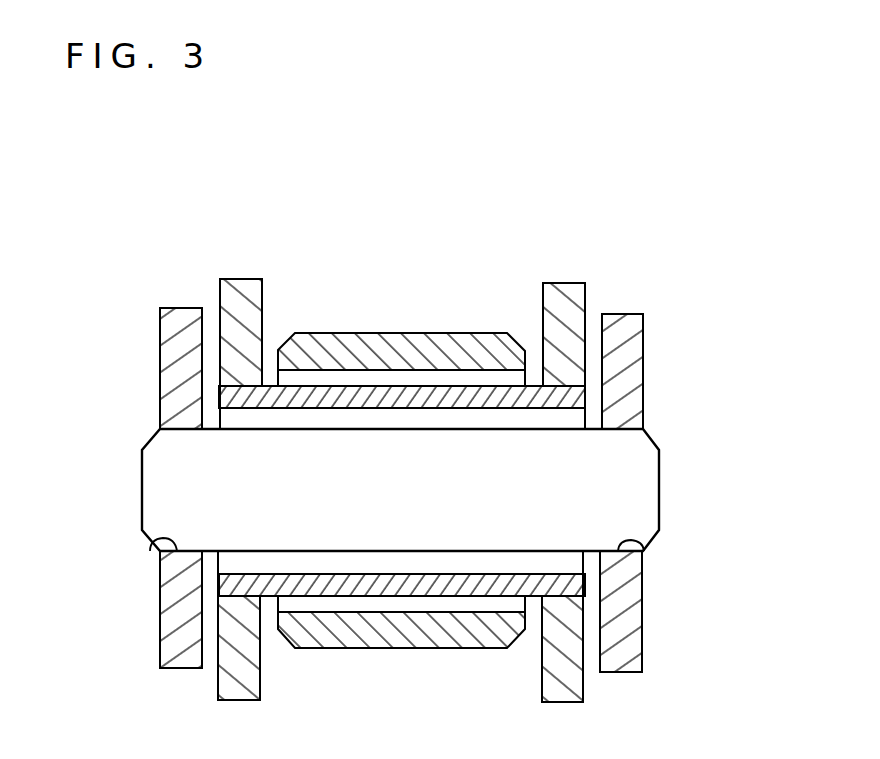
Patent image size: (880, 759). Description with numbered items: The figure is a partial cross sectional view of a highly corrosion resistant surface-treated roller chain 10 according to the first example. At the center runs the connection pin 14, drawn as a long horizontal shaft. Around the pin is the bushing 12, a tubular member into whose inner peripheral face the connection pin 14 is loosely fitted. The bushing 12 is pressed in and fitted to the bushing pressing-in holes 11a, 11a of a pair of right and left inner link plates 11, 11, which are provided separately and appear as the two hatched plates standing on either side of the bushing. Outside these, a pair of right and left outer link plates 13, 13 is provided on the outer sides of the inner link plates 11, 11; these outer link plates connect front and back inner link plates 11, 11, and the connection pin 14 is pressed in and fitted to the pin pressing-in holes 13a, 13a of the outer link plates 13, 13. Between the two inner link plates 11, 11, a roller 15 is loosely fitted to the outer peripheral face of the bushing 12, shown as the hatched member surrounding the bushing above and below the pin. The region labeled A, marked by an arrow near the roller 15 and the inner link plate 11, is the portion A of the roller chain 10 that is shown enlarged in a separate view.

The roller chain 10 is at (667, 595).
The inner link plate 11 is at (247, 298).
The bushing pressing-in hole 11a is at (230, 373).
The bushing 12 is at (573, 400).
The outer link plate 13 is at (181, 327).
The pin pressing-in hole 13a is at (152, 543).
The connection pin 14 is at (640, 493).
The roller 15 is at (378, 340).
The portion A is at (444, 326).